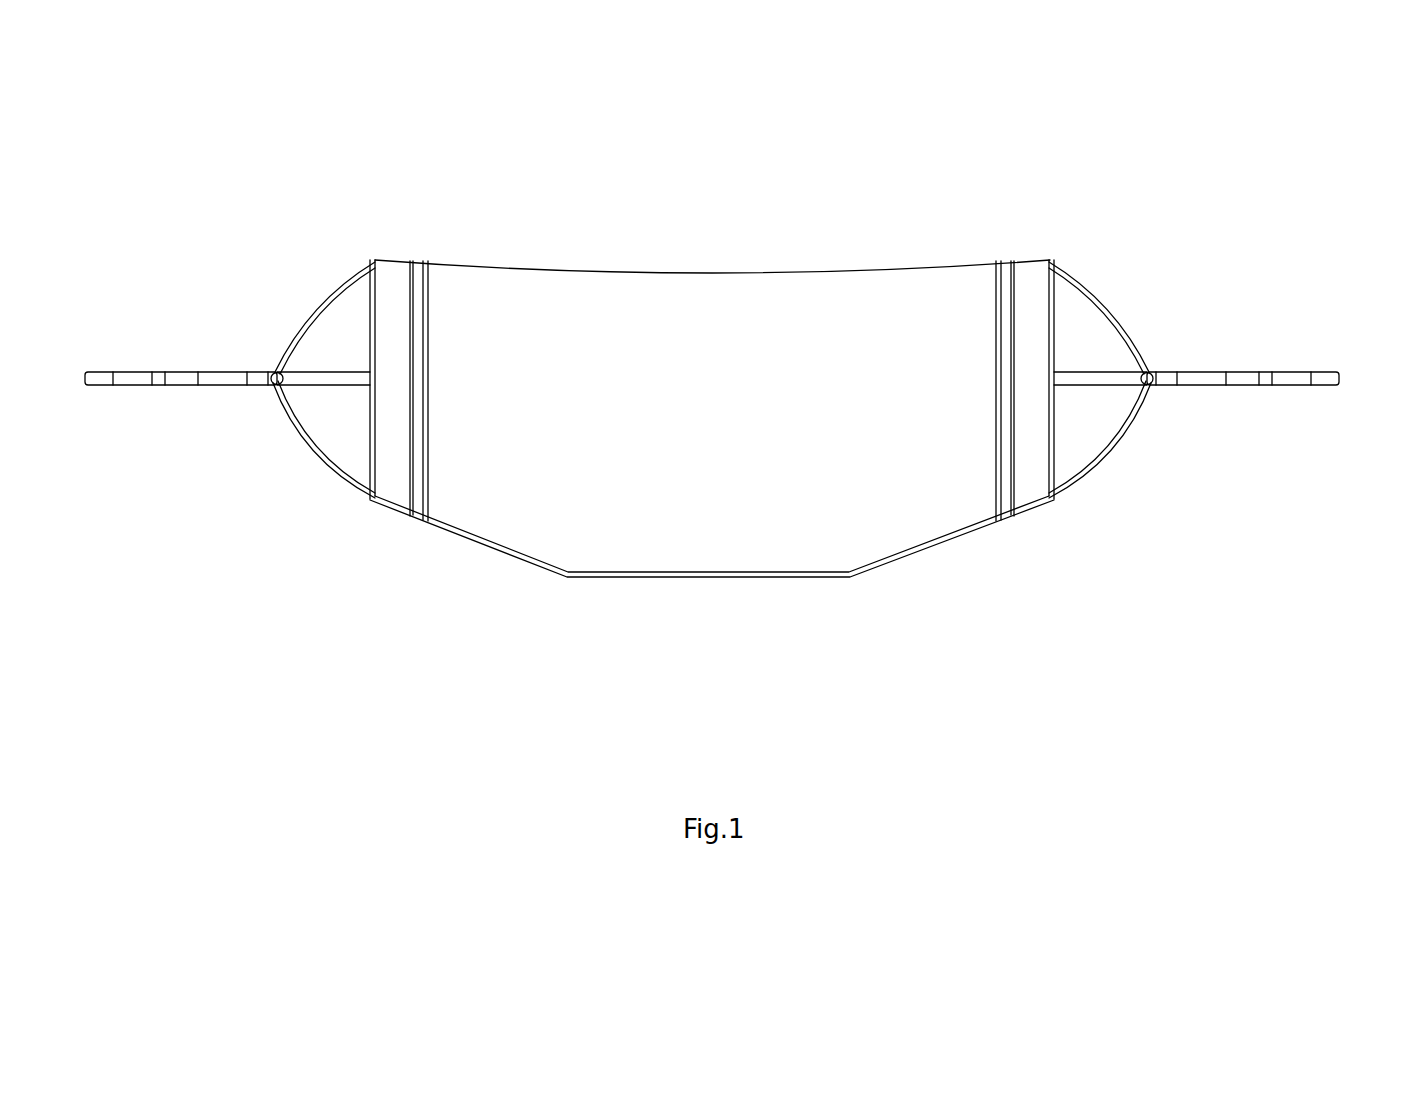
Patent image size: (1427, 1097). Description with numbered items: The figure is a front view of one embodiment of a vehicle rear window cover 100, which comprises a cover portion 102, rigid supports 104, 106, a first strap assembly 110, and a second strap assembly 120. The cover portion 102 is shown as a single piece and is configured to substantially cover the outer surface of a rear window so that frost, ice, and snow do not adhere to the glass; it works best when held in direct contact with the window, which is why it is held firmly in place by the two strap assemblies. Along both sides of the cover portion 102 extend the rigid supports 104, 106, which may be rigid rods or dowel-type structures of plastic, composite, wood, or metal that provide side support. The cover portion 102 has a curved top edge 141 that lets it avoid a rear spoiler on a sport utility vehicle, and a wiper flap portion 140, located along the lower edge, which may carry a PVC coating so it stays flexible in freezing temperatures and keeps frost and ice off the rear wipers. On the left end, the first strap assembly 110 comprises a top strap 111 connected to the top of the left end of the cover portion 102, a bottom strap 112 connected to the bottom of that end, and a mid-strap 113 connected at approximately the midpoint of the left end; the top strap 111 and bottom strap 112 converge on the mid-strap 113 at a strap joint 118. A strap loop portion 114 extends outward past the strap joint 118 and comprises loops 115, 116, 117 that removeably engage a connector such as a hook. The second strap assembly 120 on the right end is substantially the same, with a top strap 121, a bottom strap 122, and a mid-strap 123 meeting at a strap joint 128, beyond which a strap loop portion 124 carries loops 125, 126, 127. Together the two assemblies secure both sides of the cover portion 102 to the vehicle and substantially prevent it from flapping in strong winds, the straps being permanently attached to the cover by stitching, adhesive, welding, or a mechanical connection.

The vehicle rear window cover 100 is at (734, 367).
The cover portion 102 is at (727, 427).
The rigid support 104 is at (420, 508).
The rigid support 106 is at (1005, 508).
The first strap assembly 110 is at (216, 361).
The top strap 111 is at (350, 278).
The bottom strap 112 is at (298, 437).
The mid-strap 113 is at (358, 388).
The strap loop portion 114 is at (167, 370).
The loop 115 is at (100, 392).
The loop 116 is at (178, 392).
The loop 117 is at (256, 392).
The strap joint 118 is at (275, 372).
The second strap assembly 120 is at (1229, 371).
The top strap 121 is at (1070, 275).
The bottom strap 122 is at (1133, 425).
The mid-strap 123 is at (1073, 390).
The strap loop portion 124 is at (1278, 369).
The loop 125 is at (1323, 392).
The loop 126 is at (1243, 392).
The loop 127 is at (1165, 392).
The strap joint 128 is at (1150, 372).
The wiper flap portion 140 is at (823, 600).
The curved top edge 141 is at (575, 243).